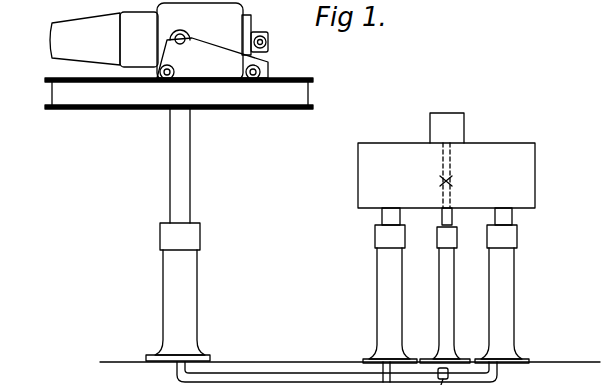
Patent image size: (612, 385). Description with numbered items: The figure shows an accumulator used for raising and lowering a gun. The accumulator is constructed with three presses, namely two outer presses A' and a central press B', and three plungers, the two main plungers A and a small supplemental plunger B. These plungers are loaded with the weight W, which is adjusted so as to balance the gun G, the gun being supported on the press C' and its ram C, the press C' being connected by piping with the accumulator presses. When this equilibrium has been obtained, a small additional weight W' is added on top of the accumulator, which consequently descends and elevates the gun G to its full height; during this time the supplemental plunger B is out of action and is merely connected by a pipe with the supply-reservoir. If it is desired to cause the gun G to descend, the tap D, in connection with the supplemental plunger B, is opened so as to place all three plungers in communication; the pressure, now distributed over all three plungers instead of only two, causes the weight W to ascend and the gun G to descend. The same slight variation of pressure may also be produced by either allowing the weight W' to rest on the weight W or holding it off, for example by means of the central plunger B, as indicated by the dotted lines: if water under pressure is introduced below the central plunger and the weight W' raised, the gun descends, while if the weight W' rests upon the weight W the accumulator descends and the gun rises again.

The gun G is at (212, 54).
The ram C is at (180, 166).
The press C' is at (178, 292).
The weight W is at (446, 175).
The additional weight W' is at (447, 128).
The plunger A is at (447, 216).
The supplemental plunger B is at (447, 216).
The press A' is at (446, 294).
The press B' is at (445, 295).
The tap D is at (449, 374).